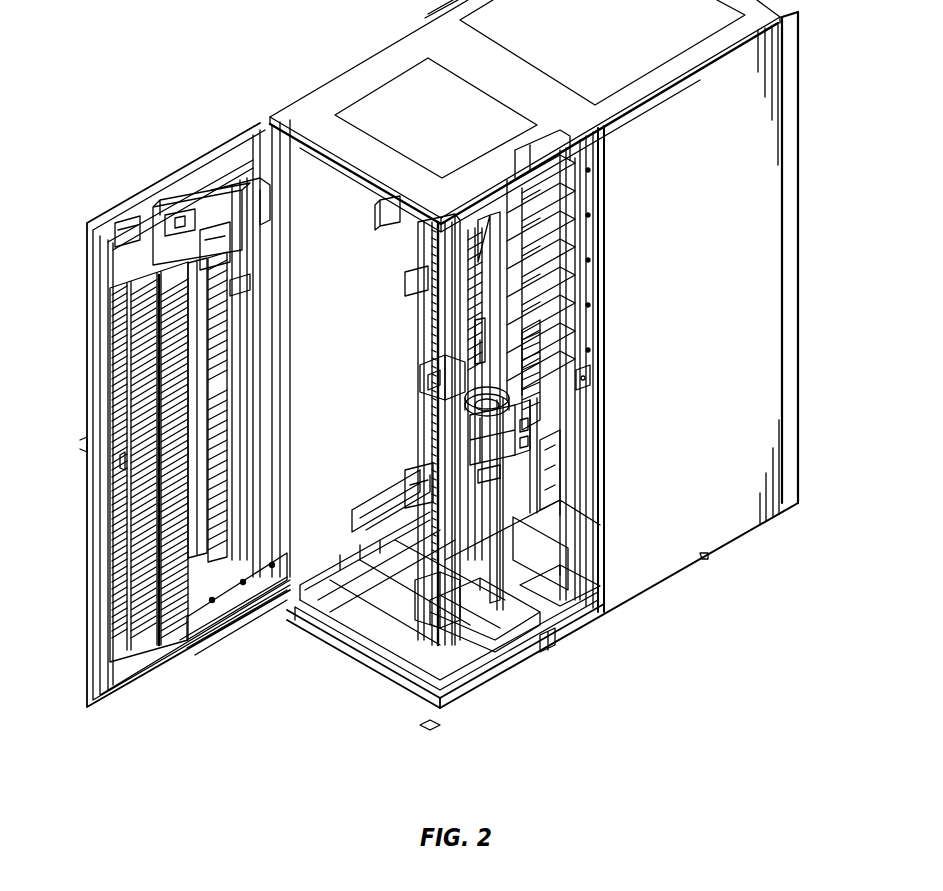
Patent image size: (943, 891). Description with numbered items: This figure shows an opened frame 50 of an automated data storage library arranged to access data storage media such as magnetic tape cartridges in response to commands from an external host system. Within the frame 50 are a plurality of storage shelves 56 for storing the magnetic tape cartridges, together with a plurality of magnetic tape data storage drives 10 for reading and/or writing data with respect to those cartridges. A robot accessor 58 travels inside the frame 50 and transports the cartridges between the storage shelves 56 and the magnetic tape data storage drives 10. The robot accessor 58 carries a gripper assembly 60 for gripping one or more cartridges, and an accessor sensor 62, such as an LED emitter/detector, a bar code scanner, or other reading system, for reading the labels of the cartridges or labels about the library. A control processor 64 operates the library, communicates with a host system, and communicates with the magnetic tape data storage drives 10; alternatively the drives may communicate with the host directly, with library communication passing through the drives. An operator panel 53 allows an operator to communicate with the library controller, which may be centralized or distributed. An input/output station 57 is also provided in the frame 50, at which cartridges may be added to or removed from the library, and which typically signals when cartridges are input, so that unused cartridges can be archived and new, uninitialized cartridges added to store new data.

The magnetic tape data storage drives 10 is at (557, 215).
The frame 50 is at (439, 365).
The operator panel 53 is at (245, 243).
The storage shelves 56 is at (428, 332).
The input/output station 57 is at (190, 305).
The robot accessor 58 is at (470, 607).
The gripper assembly 60 is at (593, 403).
The accessor sensor 62 is at (443, 437).
The control processor 64 is at (390, 207).